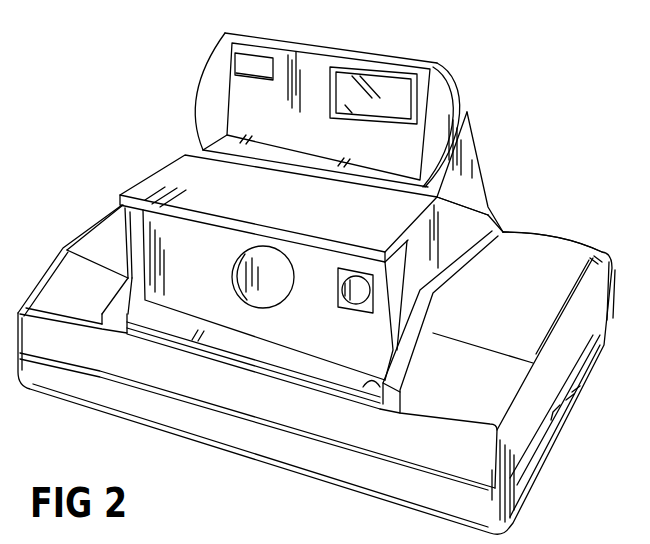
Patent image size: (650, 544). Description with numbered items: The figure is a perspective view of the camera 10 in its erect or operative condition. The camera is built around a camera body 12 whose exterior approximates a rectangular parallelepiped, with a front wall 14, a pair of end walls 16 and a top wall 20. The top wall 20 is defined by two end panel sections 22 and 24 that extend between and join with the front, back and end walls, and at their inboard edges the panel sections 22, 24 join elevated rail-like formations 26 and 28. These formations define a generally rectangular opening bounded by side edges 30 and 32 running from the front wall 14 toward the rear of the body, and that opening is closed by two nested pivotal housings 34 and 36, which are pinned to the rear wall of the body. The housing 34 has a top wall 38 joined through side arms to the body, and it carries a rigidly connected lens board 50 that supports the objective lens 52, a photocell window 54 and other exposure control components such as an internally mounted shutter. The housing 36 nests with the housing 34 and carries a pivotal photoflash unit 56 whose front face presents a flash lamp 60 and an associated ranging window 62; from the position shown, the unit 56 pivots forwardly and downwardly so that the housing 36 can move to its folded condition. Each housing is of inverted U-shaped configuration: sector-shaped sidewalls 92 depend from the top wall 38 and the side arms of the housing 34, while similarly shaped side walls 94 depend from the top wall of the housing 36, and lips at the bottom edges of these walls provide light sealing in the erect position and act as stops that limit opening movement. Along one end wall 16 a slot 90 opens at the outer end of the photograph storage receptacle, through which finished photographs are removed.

The camera 10 is at (576, 158).
The camera body 12 is at (546, 503).
The front wall 14 is at (322, 472).
The end walls 16 is at (608, 320).
The top wall 20 is at (552, 252).
The end panel section 22 is at (124, 256).
The end panel section 24 is at (523, 317).
The rail-like formation 26 is at (127, 282).
The rail-like formation 28 is at (400, 376).
The side edge 30 is at (138, 307).
The side edge 32 is at (355, 392).
The pivotal housing 34 is at (478, 221).
The pivotal housing 36 is at (480, 148).
The top wall 38 is at (334, 217).
The lens board 50 is at (202, 271).
The objective lens 52 is at (246, 285).
The photocell window 54 is at (358, 300).
The photoflash unit 56 is at (425, 58).
The flash lamp 60 is at (407, 114).
The ranging window 62 is at (258, 78).
The slot 90 is at (572, 394).
The sidewalls 92 is at (463, 242).
The side walls 94 is at (480, 200).